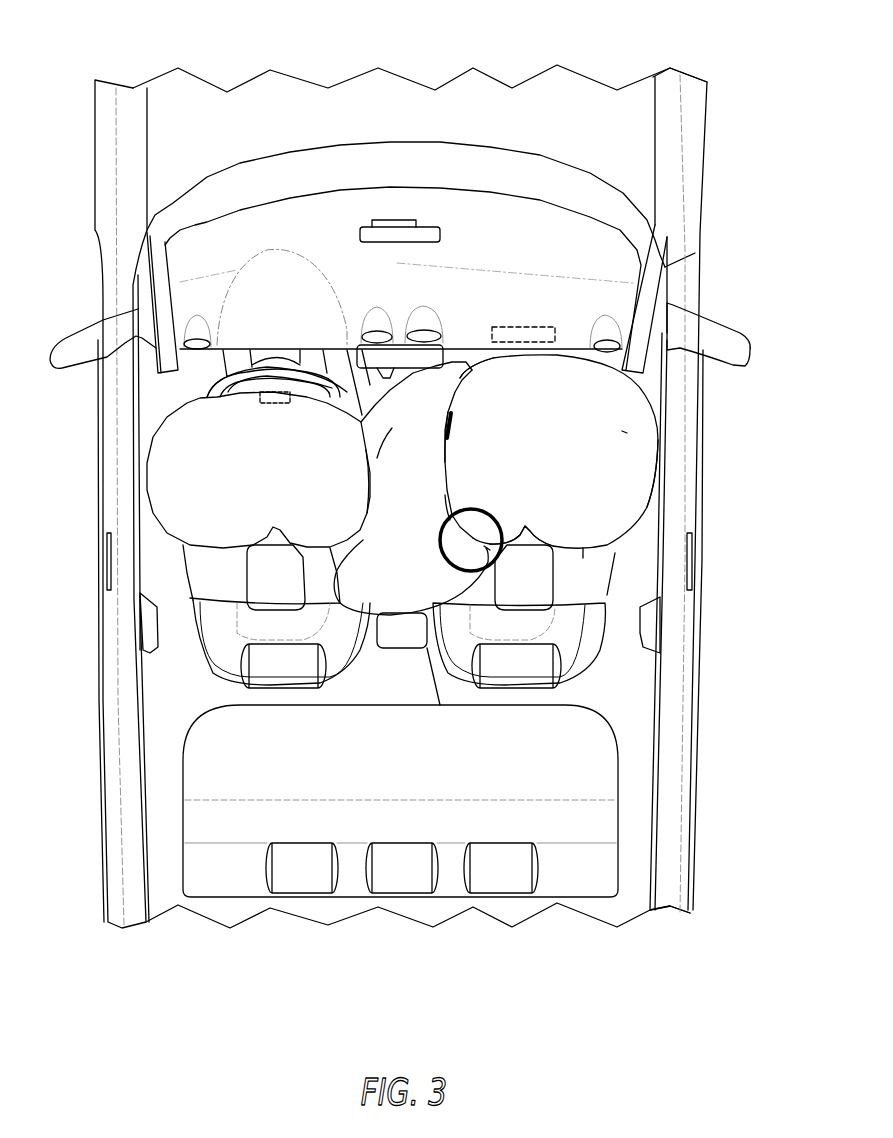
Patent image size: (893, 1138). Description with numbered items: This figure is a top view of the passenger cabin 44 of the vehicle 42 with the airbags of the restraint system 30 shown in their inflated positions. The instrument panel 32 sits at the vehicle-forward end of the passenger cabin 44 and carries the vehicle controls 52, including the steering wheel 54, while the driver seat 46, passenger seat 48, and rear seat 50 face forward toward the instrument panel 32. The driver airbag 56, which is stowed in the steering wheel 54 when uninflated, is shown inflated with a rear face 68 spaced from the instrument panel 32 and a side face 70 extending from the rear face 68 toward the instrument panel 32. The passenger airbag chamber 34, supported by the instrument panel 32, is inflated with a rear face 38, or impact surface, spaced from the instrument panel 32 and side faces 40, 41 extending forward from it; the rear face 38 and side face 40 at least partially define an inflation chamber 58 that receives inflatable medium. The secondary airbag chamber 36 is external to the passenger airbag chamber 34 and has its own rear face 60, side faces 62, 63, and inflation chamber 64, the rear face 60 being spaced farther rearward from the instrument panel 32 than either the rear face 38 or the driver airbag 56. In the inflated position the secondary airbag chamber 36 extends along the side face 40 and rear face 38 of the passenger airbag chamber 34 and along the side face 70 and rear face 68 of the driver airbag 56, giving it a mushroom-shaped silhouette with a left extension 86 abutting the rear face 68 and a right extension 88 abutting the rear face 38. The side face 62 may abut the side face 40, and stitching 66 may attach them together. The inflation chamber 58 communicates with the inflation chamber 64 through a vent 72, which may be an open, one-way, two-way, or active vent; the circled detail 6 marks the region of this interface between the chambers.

The detail view circle 6 is at (483, 568).
The restraint system 30 is at (733, 482).
The instrument panel 32 is at (660, 410).
The passenger airbag chamber 34 is at (580, 348).
The secondary airbag chamber 36 is at (458, 375).
The rear face 38 is at (560, 540).
The side face 40 is at (450, 453).
The side face 41 is at (657, 507).
The vehicle 42 is at (60, 144).
The passenger cabin 44 is at (665, 560).
The driver seat 46 is at (213, 677).
The passenger seat 48 is at (583, 680).
The rear seat 50 is at (620, 773).
The vehicle controls 52 is at (400, 208).
The steering wheel 54 is at (323, 212).
The driver airbag 56 is at (148, 465).
The inflation chamber 58 is at (627, 433).
The rear face 60 is at (400, 650).
The side face 62 is at (443, 475).
The side face 63 is at (377, 458).
The inflation chamber 64 is at (385, 578).
The stitching 66 is at (446, 507).
The rear face 68 is at (200, 547).
The side face 70 is at (370, 473).
The vent 72 is at (453, 425).
The left extension 86 is at (347, 577).
The right extension 88 is at (488, 548).